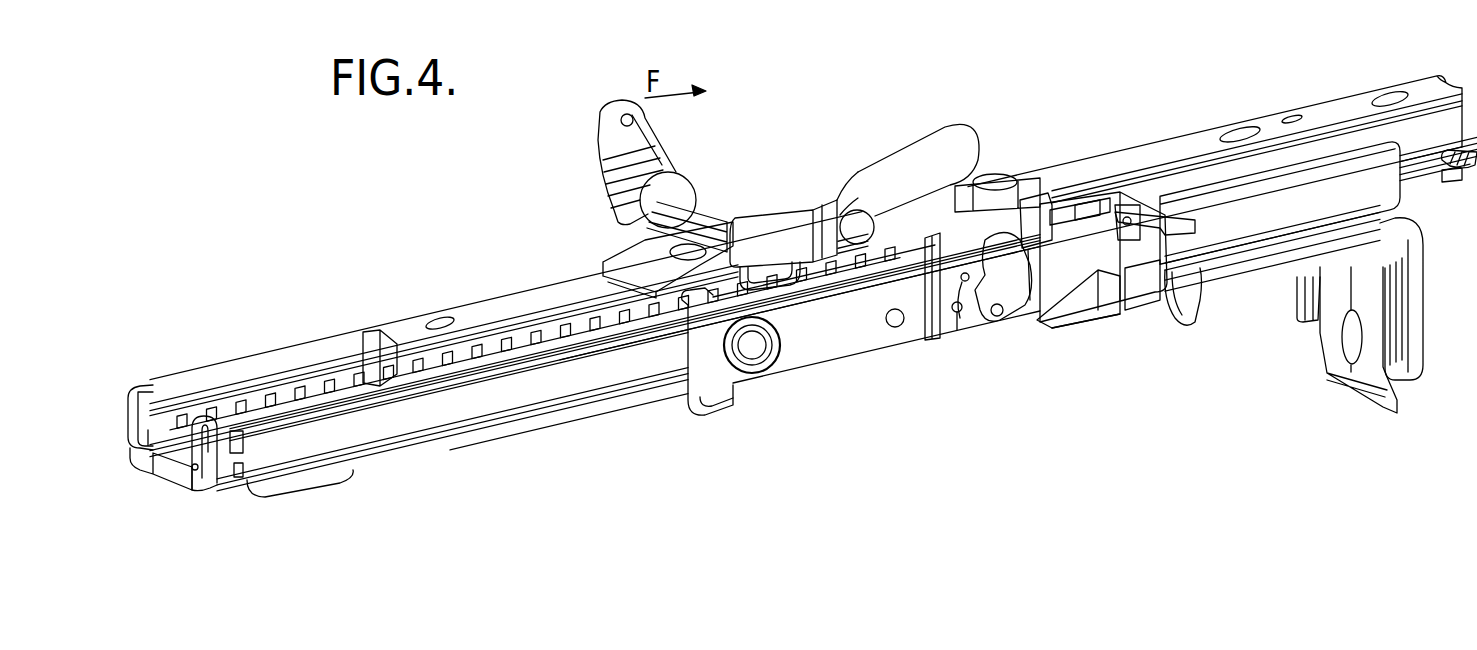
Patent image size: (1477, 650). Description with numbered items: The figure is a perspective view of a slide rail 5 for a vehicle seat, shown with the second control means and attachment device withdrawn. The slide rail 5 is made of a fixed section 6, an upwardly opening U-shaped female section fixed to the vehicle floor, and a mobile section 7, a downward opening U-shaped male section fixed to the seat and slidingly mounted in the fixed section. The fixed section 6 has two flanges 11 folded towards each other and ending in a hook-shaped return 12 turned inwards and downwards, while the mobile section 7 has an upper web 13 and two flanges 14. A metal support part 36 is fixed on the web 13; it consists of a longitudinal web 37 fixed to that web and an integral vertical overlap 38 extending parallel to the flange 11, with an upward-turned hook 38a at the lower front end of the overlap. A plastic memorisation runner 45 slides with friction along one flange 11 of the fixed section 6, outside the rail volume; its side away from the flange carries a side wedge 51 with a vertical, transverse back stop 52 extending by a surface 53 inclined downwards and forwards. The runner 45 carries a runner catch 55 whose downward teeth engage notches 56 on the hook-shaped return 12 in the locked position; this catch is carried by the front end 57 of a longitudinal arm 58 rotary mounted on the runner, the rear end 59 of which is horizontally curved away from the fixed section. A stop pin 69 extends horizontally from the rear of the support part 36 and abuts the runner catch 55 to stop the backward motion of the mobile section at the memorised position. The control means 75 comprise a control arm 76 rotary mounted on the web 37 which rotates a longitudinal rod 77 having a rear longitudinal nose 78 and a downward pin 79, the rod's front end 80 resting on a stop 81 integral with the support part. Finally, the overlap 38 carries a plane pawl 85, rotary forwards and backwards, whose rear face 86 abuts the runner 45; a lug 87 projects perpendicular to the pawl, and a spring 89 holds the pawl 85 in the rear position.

The slide rail 5 is at (1070, 162).
The fixed section 6 is at (260, 450).
The mobile section 7 is at (500, 298).
The flange 11 is at (400, 415).
The hook-shaped return 12 is at (305, 400).
The web 13 is at (540, 300).
The flange 14 is at (357, 345).
The support part 36 is at (992, 170).
The longitudinal web 37 is at (655, 265).
The vertical overlap 38 is at (835, 340).
The hook 38a is at (720, 398).
The memorisation runner 45 is at (1160, 302).
The side wedge 51 is at (1093, 305).
The back stop 52 is at (1122, 292).
The inclined surface 53 is at (1070, 292).
The runner catch 55 is at (1060, 213).
The notches 56 is at (497, 368).
The front end 57 is at (1098, 205).
The longitudinal arm 58 is at (1127, 212).
The rear end 59 is at (1150, 212).
The stop pin 69 is at (1033, 225).
The control means 75 is at (690, 178).
The control arm 76 is at (625, 168).
The longitudinal rod 77 is at (840, 195).
The longitudinal nose 78 is at (950, 160).
The pin 79 is at (930, 245).
The front end 80 is at (747, 228).
The stop 81 is at (745, 305).
The plane pawl 85 is at (1008, 277).
The rear face 86 is at (1030, 265).
The lug 87 is at (966, 282).
The spring 89 is at (955, 313).